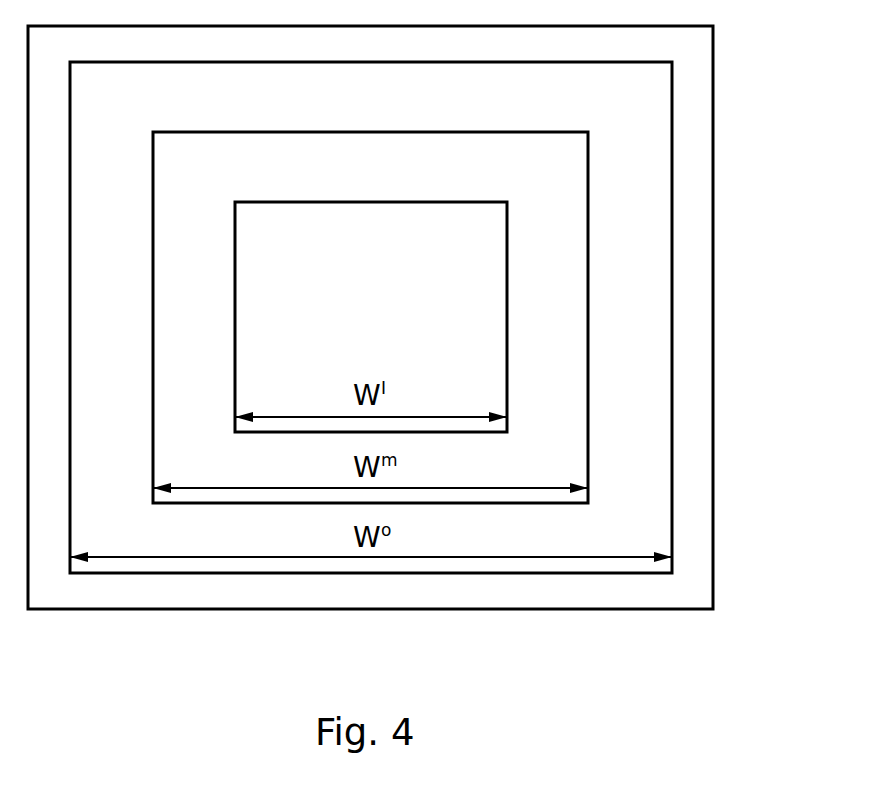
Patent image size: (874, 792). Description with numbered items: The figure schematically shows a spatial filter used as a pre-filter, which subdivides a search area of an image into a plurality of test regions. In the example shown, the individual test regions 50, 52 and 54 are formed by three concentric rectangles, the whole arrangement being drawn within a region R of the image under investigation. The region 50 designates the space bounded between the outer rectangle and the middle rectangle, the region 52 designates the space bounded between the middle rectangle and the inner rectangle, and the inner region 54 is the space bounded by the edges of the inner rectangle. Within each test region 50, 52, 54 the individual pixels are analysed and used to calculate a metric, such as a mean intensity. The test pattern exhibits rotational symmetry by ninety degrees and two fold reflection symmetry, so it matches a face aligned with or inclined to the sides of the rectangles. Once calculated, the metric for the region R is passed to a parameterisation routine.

The region of the image under investigation R is at (625, 610).
The test region 50 is at (633, 121).
The test region 52 is at (548, 222).
The inner region 54 is at (455, 303).